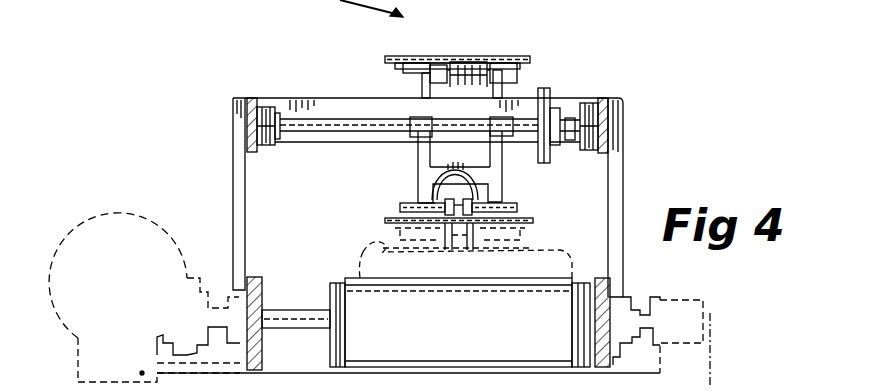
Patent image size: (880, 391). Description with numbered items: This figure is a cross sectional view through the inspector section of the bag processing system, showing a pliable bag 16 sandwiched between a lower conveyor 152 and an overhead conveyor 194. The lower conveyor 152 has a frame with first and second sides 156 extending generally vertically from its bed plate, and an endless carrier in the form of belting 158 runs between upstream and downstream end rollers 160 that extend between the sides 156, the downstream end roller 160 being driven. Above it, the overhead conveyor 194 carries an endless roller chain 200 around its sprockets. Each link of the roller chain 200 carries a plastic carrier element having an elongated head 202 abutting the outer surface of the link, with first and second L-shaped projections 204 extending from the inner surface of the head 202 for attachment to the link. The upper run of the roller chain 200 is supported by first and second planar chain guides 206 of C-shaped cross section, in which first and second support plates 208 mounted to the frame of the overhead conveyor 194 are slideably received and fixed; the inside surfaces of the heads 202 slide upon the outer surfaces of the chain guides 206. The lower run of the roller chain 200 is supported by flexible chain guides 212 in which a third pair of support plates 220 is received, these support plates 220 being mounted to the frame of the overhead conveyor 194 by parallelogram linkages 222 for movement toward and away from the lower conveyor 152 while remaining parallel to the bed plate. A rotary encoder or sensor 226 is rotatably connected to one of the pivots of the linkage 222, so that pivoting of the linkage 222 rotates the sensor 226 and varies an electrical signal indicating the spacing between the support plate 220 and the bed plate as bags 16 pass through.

The pliable bag 16 is at (362, 252).
The lower conveyor 152 is at (592, 245).
The sides 156 is at (262, 292).
The belting 158 is at (502, 331).
The end rollers 160 is at (340, 346).
The overhead conveyor 194 is at (504, 58).
The roller chain 200 is at (461, 60).
The elongated head 202 is at (398, 57).
The L-shaped projections 204 is at (430, 168).
The planar chain guides 206 is at (402, 67).
The support plates 208 is at (422, 82).
The flexible chain guides 212 is at (400, 203).
The third pair of support plates 220 is at (508, 183).
The parallelogram linkages 222 is at (430, 163).
The rotary encoder or sensor 226 is at (567, 103).